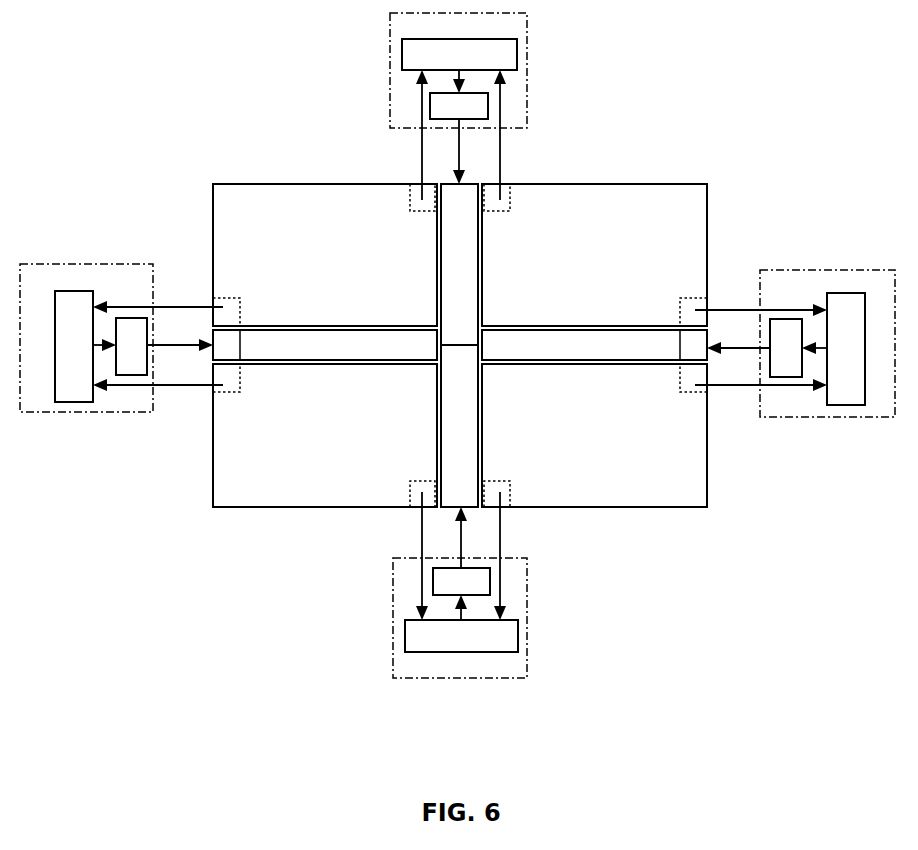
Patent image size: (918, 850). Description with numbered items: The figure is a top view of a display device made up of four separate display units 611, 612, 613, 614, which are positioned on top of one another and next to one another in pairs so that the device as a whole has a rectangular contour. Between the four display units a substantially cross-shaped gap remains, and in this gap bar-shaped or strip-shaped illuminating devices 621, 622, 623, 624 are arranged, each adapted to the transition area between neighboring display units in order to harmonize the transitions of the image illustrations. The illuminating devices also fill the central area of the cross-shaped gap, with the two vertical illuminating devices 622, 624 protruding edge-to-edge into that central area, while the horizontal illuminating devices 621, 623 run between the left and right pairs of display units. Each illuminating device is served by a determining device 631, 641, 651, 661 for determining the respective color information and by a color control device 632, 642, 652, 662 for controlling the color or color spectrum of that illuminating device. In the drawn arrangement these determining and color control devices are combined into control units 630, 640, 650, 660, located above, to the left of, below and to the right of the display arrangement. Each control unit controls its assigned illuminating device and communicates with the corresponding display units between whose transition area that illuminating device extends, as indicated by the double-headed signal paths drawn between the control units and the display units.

The display unit 611 is at (325, 255).
The display unit 612 is at (325, 435).
The display unit 613 is at (594, 255).
The display unit 614 is at (594, 435).
The illuminating device 621 is at (325, 345).
The illuminating device 622 is at (459, 264).
The illuminating device 623 is at (594, 345).
The illuminating device 624 is at (459, 426).
The control unit 630 is at (458, 70).
The determining device 631 is at (459, 54).
The color control device 632 is at (459, 106).
The control unit 640 is at (86, 338).
The determining device 641 is at (74, 346).
The color control device 642 is at (131, 346).
The control unit 650 is at (460, 618).
The determining device 651 is at (461, 636).
The color control device 652 is at (461, 581).
The control unit 660 is at (827, 343).
The determining device 661 is at (846, 349).
The color control device 662 is at (786, 348).